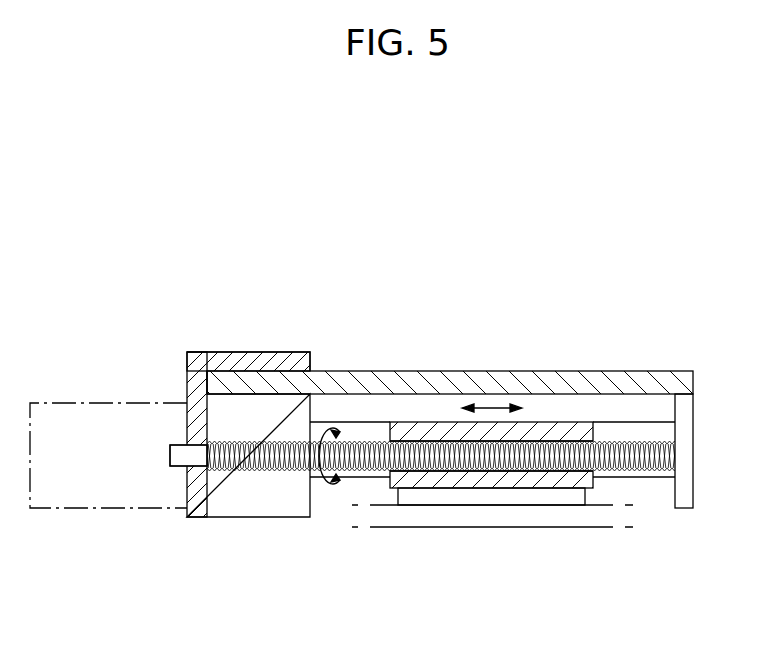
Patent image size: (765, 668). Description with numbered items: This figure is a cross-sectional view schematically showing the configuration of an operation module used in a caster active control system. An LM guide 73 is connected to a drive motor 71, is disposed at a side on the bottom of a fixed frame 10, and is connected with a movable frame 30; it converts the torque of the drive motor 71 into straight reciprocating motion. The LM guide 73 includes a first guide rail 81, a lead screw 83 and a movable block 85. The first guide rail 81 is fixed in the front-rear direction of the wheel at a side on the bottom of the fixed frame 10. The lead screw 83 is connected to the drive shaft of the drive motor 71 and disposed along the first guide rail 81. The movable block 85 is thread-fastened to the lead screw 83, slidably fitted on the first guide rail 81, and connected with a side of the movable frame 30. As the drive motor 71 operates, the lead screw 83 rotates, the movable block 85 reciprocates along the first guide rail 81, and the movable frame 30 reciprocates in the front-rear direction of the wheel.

The fixed frame 10 is at (578, 385).
The movable frame 30 is at (490, 522).
The drive motor 71 is at (107, 508).
The LM guide 73 is at (326, 508).
The first guide rail 81 is at (652, 478).
The lead screw 83 is at (628, 440).
The movable block 85 is at (416, 432).